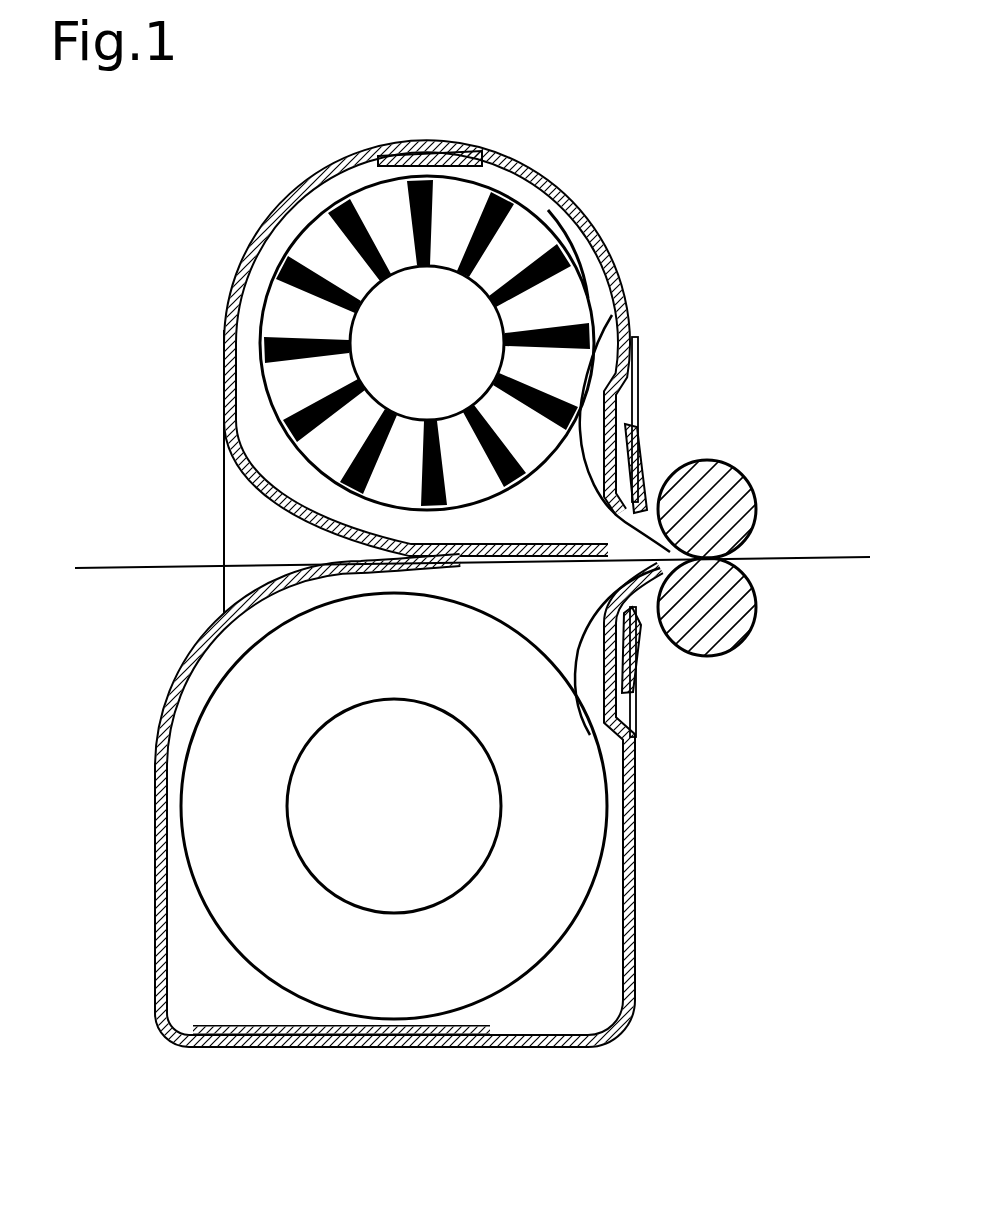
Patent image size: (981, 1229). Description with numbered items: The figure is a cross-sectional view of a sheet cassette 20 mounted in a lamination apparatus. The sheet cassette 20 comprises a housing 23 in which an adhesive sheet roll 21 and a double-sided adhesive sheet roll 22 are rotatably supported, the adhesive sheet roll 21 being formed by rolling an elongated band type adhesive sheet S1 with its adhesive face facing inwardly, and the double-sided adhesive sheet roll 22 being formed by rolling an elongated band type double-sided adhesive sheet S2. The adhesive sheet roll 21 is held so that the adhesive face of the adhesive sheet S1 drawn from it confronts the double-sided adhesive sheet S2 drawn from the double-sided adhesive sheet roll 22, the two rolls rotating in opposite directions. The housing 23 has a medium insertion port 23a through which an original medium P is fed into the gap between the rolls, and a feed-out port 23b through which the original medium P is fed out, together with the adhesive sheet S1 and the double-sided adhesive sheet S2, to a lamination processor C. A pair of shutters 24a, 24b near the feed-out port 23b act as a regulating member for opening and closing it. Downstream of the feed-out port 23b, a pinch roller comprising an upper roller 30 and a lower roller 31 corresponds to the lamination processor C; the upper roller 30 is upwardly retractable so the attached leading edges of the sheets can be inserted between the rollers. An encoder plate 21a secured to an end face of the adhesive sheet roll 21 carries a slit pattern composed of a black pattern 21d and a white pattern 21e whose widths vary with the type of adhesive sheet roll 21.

The sheet cassette 20 is at (530, 127).
The adhesive sheet roll 21 is at (553, 213).
The encoder plate 21a is at (585, 293).
The black pattern 21d is at (417, 178).
The white pattern 21e is at (360, 200).
The double-sided adhesive sheet roll 22 is at (578, 907).
The housing 23 is at (278, 205).
The medium insertion port 23a is at (272, 548).
The feed-out port 23b is at (617, 573).
The shutter 24a is at (637, 443).
The shutter 24b is at (638, 655).
The upper roller 30 is at (745, 484).
The lower roller 31 is at (748, 620).
The lamination processor C is at (772, 447).
The original medium P is at (113, 570).
The adhesive sheet S1 is at (590, 460).
The double-sided adhesive sheet S2 is at (628, 698).